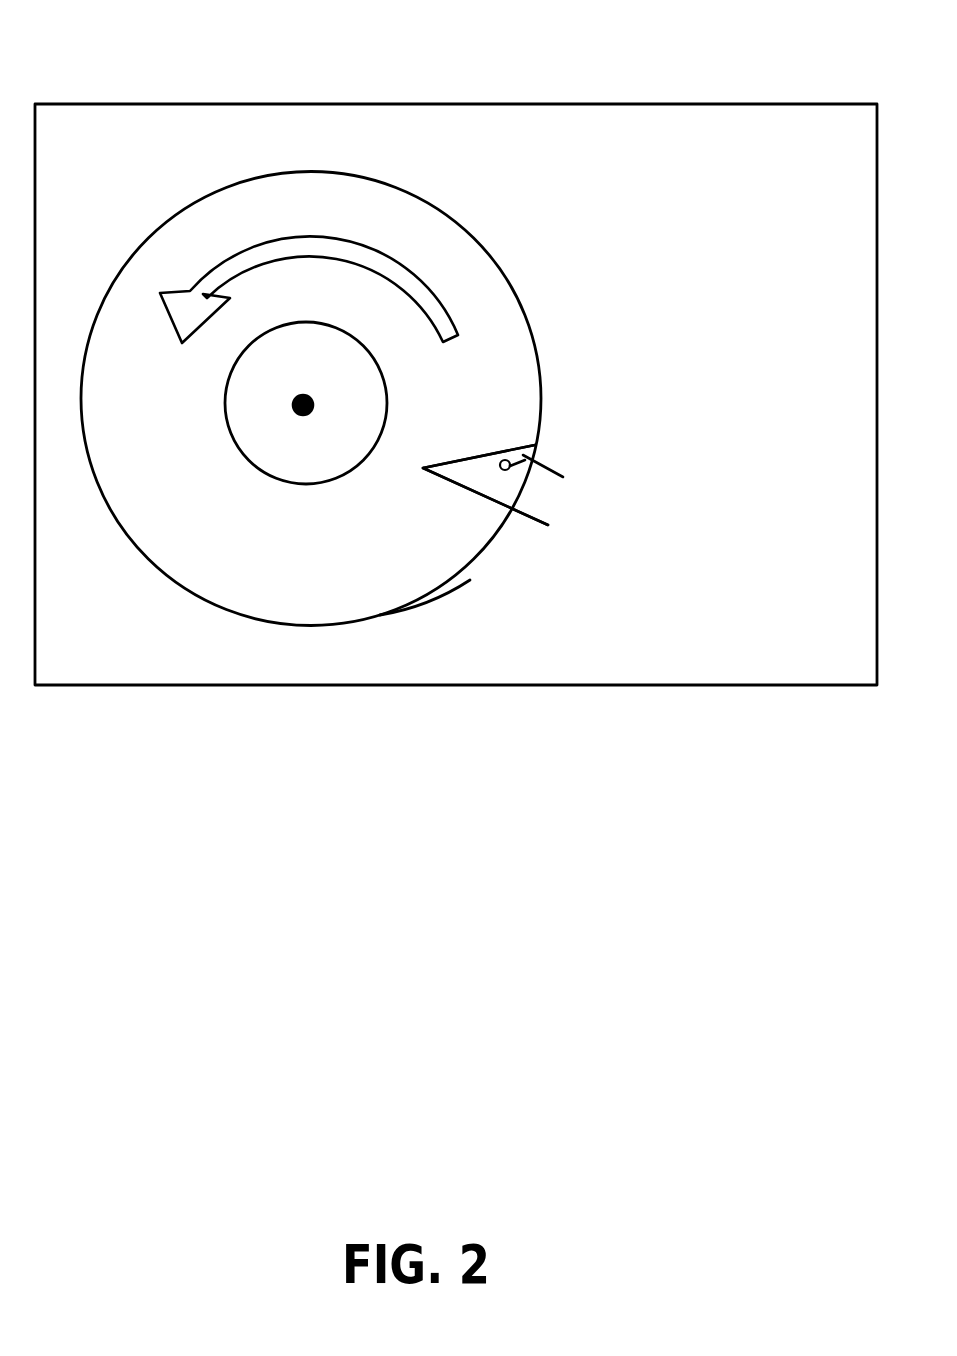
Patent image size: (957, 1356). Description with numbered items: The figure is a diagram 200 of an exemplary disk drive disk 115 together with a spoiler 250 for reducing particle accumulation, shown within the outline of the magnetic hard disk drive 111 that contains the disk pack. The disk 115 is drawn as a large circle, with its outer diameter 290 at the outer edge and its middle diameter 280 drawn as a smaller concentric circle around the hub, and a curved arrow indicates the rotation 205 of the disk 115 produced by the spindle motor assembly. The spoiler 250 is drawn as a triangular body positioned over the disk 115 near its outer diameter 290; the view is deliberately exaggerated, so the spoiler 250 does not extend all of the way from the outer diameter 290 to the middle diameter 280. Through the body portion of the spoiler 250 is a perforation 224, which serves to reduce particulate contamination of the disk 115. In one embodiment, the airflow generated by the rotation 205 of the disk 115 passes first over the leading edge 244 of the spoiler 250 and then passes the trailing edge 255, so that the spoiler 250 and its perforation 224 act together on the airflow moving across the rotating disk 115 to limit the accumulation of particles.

The diagram 200 is at (228, 42).
The magnetic hard disk drive 111 is at (258, 685).
The magnetic disk 115 is at (502, 268).
The outer diameter 290 is at (422, 597).
The middle diameter 280 is at (293, 483).
The rotation 205 is at (413, 264).
The spoiler 250 is at (514, 443).
The trailing edge 255 is at (453, 462).
The leading edge 244 is at (450, 478).
The perforation 224 is at (536, 471).